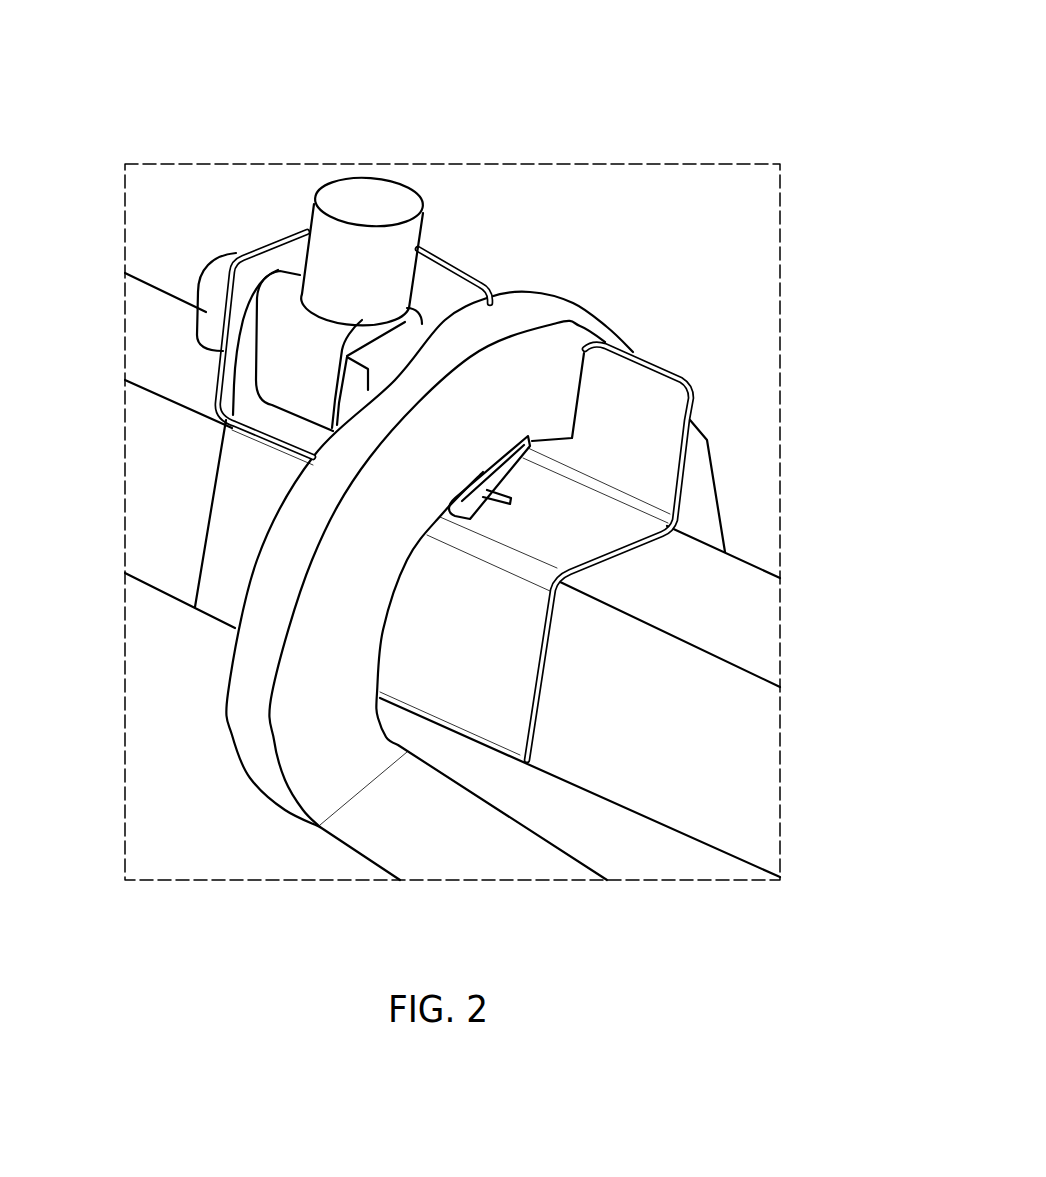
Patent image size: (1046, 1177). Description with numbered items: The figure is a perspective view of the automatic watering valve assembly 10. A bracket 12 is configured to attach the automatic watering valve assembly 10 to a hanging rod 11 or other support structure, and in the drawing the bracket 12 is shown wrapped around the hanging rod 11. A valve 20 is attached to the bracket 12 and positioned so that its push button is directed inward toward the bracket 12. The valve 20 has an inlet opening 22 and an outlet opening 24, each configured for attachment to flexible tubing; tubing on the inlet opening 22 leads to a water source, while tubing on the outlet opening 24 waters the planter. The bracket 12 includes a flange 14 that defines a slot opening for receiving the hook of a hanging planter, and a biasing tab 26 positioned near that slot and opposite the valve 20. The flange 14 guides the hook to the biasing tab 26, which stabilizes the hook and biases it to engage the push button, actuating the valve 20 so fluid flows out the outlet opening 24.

The automatic watering valve assembly 10 is at (659, 48).
The hanging rod 11 is at (727, 590).
The bracket 12 is at (523, 567).
The flange 14 is at (563, 453).
The valve 20 is at (300, 361).
The inlet opening 22 is at (345, 198).
The outlet opening 24 is at (205, 318).
The biasing tab 26 is at (482, 461).